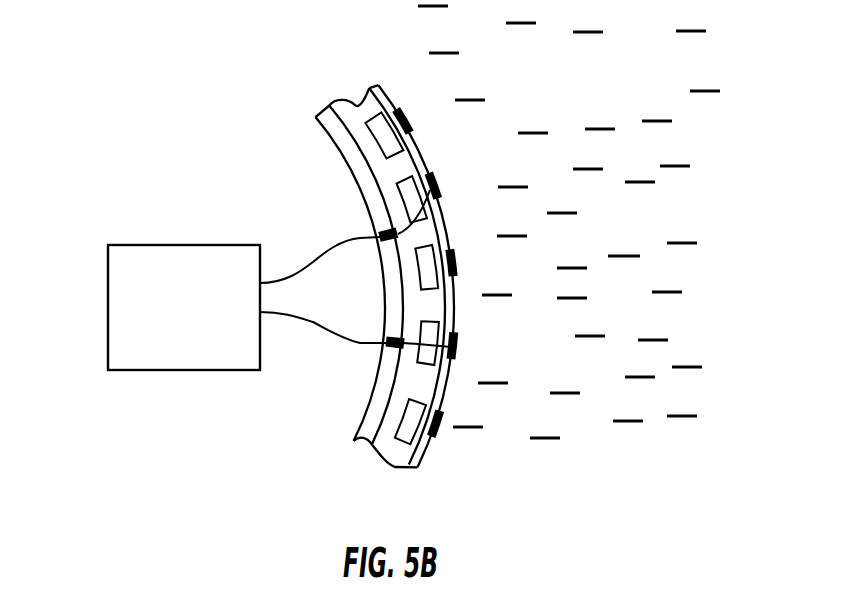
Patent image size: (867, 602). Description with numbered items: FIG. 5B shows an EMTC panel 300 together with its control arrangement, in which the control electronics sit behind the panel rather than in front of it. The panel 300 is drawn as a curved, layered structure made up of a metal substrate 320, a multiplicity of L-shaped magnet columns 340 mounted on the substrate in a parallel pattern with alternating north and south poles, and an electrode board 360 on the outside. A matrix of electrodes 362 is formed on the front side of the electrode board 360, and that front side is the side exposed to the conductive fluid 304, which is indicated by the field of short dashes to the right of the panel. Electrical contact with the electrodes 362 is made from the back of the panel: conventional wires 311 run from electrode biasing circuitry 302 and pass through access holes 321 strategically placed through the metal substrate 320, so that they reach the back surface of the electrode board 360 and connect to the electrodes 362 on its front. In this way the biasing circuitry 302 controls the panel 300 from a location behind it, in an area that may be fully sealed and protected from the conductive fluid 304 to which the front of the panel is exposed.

The EMTC panel 300 is at (388, 78).
The biasing circuitry 302 is at (107, 306).
The conductive fluid 304 is at (667, 222).
The wires 311 is at (333, 247).
The metal substrate 320 is at (358, 442).
The access holes 321 is at (370, 232).
The magnet columns 340 is at (387, 460).
The electrode board 360 is at (412, 463).
The electrodes 362 is at (460, 347).